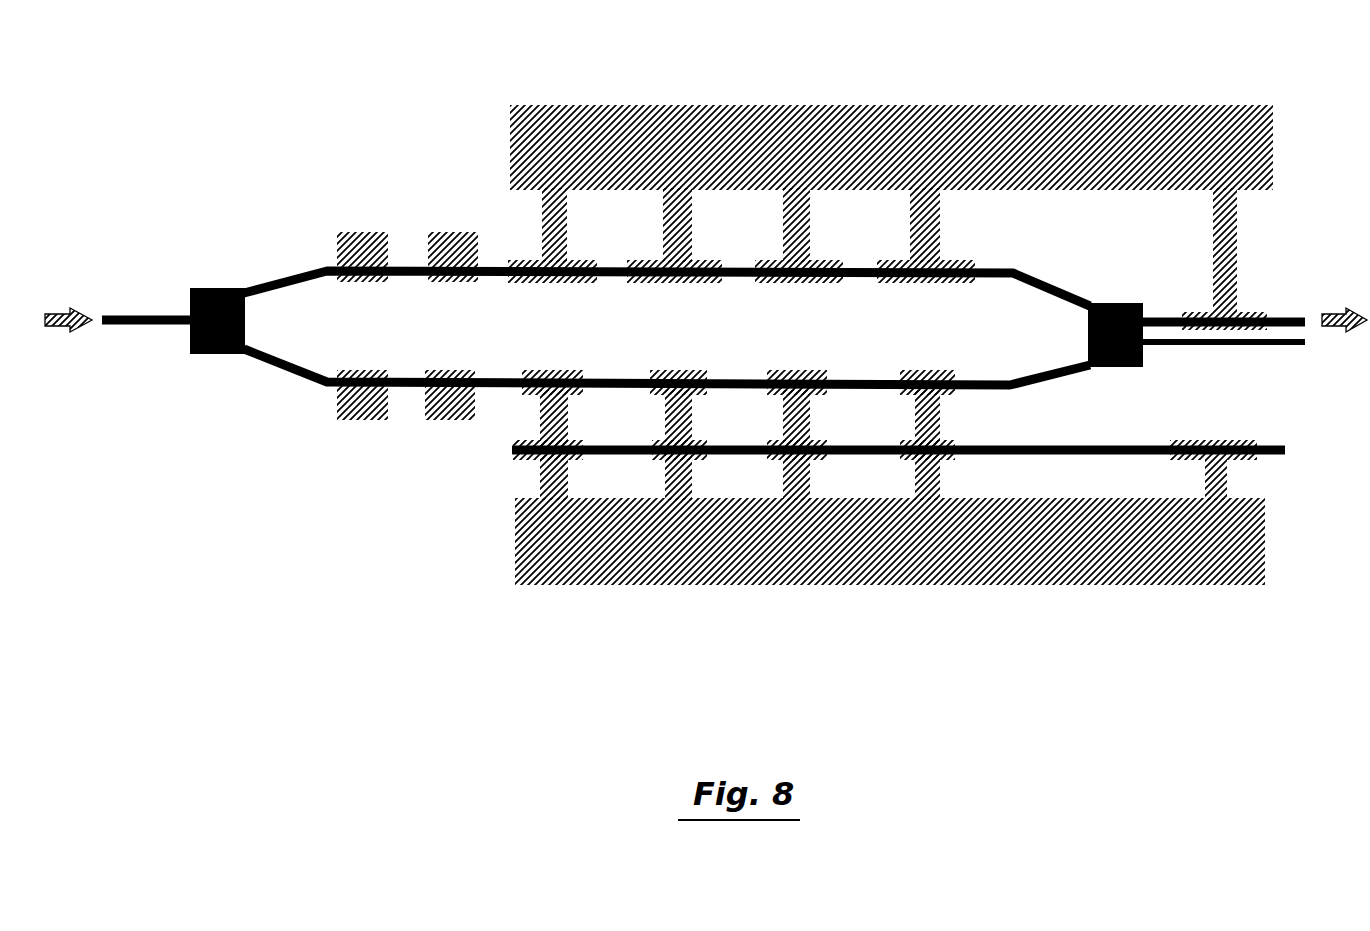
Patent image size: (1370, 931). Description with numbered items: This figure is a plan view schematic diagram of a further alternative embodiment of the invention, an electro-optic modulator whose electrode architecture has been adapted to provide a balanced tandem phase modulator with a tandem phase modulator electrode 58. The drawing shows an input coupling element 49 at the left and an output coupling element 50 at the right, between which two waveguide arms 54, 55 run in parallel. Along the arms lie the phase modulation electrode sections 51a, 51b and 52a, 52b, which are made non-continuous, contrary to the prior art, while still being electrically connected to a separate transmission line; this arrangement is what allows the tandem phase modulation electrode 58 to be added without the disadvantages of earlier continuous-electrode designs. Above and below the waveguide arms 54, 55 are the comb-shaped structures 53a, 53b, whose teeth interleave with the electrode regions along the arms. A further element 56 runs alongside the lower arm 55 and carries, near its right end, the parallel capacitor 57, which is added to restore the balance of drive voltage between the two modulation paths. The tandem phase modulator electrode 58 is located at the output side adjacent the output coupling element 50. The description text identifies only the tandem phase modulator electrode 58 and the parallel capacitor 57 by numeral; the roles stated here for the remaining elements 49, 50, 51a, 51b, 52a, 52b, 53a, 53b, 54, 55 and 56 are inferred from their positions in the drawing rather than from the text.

The input coupler 49 is at (203, 288).
The output coupler 50 is at (1113, 303).
The upper phase shifter section 51a is at (356, 232).
The lower phase shifter section 51b is at (368, 415).
The upper electrode 52a is at (455, 235).
The lower electrode 52b is at (438, 420).
The upper heat sink comb 53a is at (803, 104).
The lower heat sink comb 53b is at (793, 583).
The upper waveguide arm 54 is at (522, 258).
The lower waveguide arm 55 is at (535, 395).
The reference waveguide 56 is at (528, 458).
The parallel capacitor 57 is at (1245, 459).
The tandem phase modulator electrode 58 is at (1264, 308).